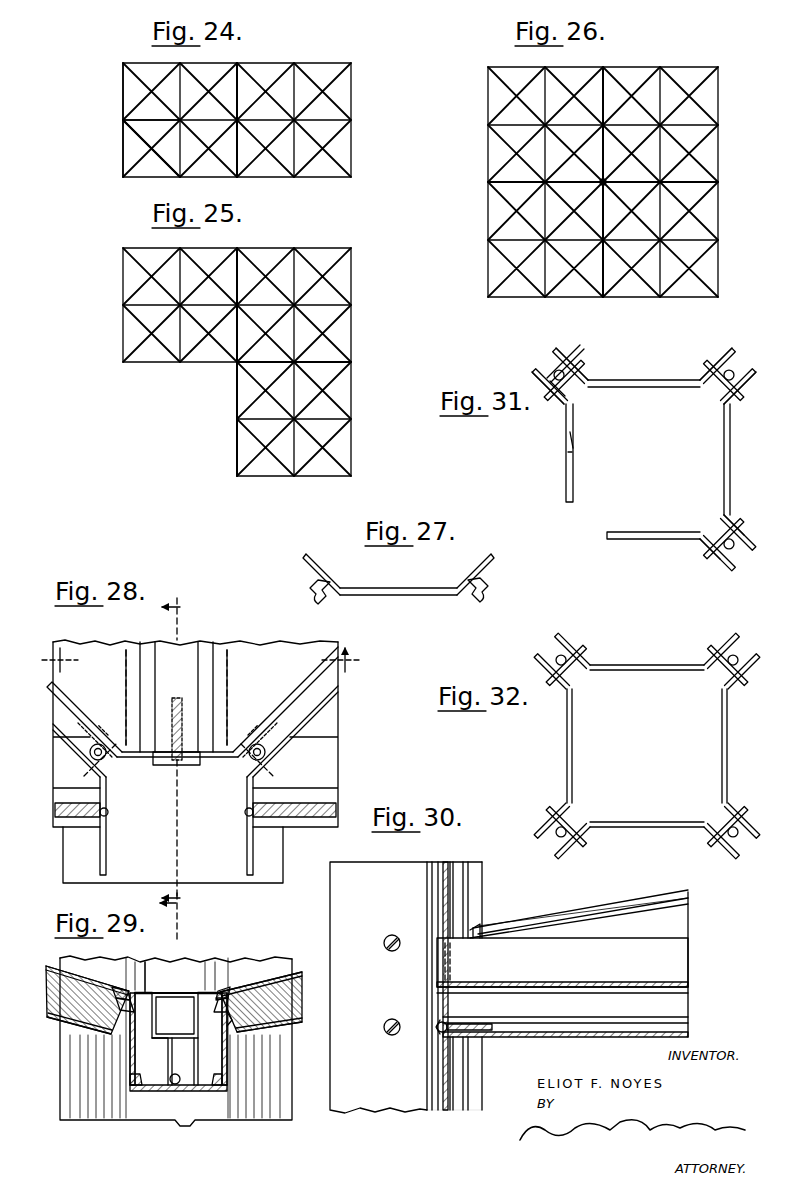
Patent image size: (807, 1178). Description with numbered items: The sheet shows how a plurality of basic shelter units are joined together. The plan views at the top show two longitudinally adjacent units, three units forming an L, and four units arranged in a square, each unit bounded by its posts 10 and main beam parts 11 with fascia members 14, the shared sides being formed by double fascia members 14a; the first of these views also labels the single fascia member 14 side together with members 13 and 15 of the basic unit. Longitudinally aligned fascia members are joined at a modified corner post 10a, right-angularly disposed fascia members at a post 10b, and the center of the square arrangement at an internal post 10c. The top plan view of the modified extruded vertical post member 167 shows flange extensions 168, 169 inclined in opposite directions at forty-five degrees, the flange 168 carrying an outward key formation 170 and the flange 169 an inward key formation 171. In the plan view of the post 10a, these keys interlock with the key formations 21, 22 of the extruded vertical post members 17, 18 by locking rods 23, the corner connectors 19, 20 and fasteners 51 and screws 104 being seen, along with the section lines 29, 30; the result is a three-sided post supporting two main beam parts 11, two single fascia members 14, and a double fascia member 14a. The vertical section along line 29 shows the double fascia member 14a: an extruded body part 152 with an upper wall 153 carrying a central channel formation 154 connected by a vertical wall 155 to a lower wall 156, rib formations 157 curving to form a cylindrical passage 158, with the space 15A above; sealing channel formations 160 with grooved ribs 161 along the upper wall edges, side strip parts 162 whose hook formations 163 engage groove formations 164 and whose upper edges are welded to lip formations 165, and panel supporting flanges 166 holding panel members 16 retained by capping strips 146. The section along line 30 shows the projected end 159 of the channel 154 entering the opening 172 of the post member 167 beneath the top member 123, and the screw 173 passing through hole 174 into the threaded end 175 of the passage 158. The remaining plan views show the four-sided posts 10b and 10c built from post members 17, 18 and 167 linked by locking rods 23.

In FIG. 24, the post 10 is at (123, 63).
In FIG. 25, the post 10 is at (123, 248).
In FIG. 26, the post 10 is at (488, 67).
In FIG. 24, the modified corner post 10a is at (237, 63).
In FIG. 25, the modified corner post 10a is at (237, 248).
In FIG. 26, the modified corner post 10a is at (603, 67).
In FIG. 28, the modified corner post 10a is at (88, 858).
In FIG. 29, the modified corner post 10a is at (195, 1128).
In FIG. 30, the modified corner post 10a is at (418, 1120).
In FIG. 25, the modified corner post 10b is at (237, 362).
In FIG. 31, the modified corner post 10b is at (562, 454).
In FIG. 26, the modified corner post 10c is at (603, 182).
In FIG. 32, the modified corner post 10c is at (634, 648).
In FIG. 24, the main beam part 11 is at (128, 70).
In FIG. 25, the main beam part 11 is at (237, 362).
In FIG. 26, the main beam part 11 is at (603, 182).
In FIG. 30, the main beam part 11 is at (608, 903).
In FIG. 24, the diagonal strut 13 is at (135, 132).
In FIG. 24, the fascia member 14 is at (123, 98).
In FIG. 28, the fascia member 14 is at (52, 815).
In FIG. 24, the double fascia member 14a is at (237, 120).
In FIG. 25, the double fascia member 14a is at (237, 286).
In FIG. 26, the double fascia member 14a is at (603, 103).
In FIG. 28, the double fascia member 14a is at (140, 644).
In FIG. 29, the double fascia member 14a is at (202, 957).
In FIG. 30, the double fascia member 14a is at (702, 993).
In FIG. 24, the horizontal strut 15 is at (123, 120).
In FIG. 29, the channel box 15A is at (175, 1015).
In FIG. 29, the panel member 16 is at (38, 990).
In FIG. 31, the extruded vertical post member 17 is at (573, 476).
In FIG. 28, the extruded vertical post member 17 is at (106, 862).
In FIG. 30, the extruded vertical post member 17 is at (352, 1108).
In FIG. 31, the extruded vertical post member 18 is at (630, 532).
In FIG. 28, the extruded vertical post member 18 is at (247, 868).
In FIG. 31, the corner connector 19 is at (556, 392).
In FIG. 28, the corner connector 19 is at (88, 768).
In FIG. 31, the corner connector 20 is at (722, 566).
In FIG. 28, the corner connector 20 is at (266, 760).
In FIG. 31, the key formation 21 is at (582, 372).
In FIG. 28, the key formation 21 is at (88, 736).
In FIG. 31, the key formation 22 is at (736, 522).
In FIG. 28, the key formation 22 is at (242, 772).
In FIG. 31, the locking rod 23 is at (556, 370).
In FIG. 32, the locking rod 23 is at (730, 658).
In FIG. 28, the locking rod 23 is at (110, 782).
In FIG. 28, the section line 29 is at (195, 669).
In FIG. 28, the section line 30 is at (181, 752).
In FIG. 29, the section line 30 is at (179, 916).
In FIG. 28, the fastener 51 is at (86, 754).
In FIG. 28, the screw 104 is at (108, 818).
In FIG. 30, the screw 104 is at (386, 950).
In FIG. 30, the top member 123 is at (688, 899).
In FIG. 28, the capping strip 146 is at (98, 648).
In FIG. 29, the capping strip 146 is at (72, 967).
In FIG. 30, the capping strip 146 is at (688, 928).
In FIG. 29, the extruded body part 152 is at (160, 1092).
In FIG. 28, the upper wall 153 is at (206, 655).
In FIG. 29, the upper wall 153 is at (150, 990).
In FIG. 28, the channel formation 154 is at (192, 652).
In FIG. 30, the channel formation 154 is at (575, 985).
In FIG. 29, the vertical wall 155 is at (174, 1051).
In FIG. 30, the vertical wall 155 is at (688, 1012).
In FIG. 29, the lower wall 156 is at (135, 1092).
In FIG. 30, the lower wall 156 is at (563, 1038).
In FIG. 29, the rib formation 157 is at (180, 1076).
In FIG. 30, the rib formation 157 is at (608, 1025).
In FIG. 29, the cylindrical passage 158 is at (178, 1092).
In FIG. 30, the cylindrical passage 158 is at (566, 1028).
In FIG. 28, the projected end 159 is at (200, 765).
In FIG. 30, the projected end 159 is at (440, 978).
In FIG. 29, the sealing channel formation 160 is at (128, 988).
In FIG. 29, the grooved rib 161 is at (115, 985).
In FIG. 29, the extruded strip part 162 is at (230, 1058).
In FIG. 29, the hook formation 163 is at (228, 1080).
In FIG. 29, the groove formation 164 is at (222, 1090).
In FIG. 29, the lip formation 165 is at (230, 1040).
In FIG. 29, the panel supporting flange 166 is at (80, 1030).
In FIG. 27, the modified extruded vertical post member 167 is at (398, 596).
In FIG. 31, the modified extruded vertical post member 167 is at (640, 388).
In FIG. 32, the modified extruded vertical post member 167 is at (632, 672).
In FIG. 28, the modified extruded vertical post member 167 is at (132, 758).
In FIG. 30, the modified extruded vertical post member 167 is at (443, 898).
In FIG. 27, the flange extension 168 is at (324, 572).
In FIG. 31, the flange extension 168 is at (572, 358).
In FIG. 28, the flange extension 168 is at (120, 735).
In FIG. 27, the flange extension 169 is at (478, 565).
In FIG. 31, the flange extension 169 is at (724, 362).
In FIG. 28, the flange extension 169 is at (252, 735).
In FIG. 27, the key formation 170 is at (326, 602).
In FIG. 31, the key formation 170 is at (576, 398).
In FIG. 28, the key formation 170 is at (100, 722).
In FIG. 27, the key formation 171 is at (490, 580).
In FIG. 31, the key formation 171 is at (740, 368).
In FIG. 28, the key formation 171 is at (254, 733).
In FIG. 29, the opening 172 is at (184, 992).
In FIG. 30, the opening 172 is at (450, 997).
In FIG. 28, the screw 173 is at (177, 762).
In FIG. 30, the screw 173 is at (437, 1030).
In FIG. 30, the hole 174 is at (440, 1033).
In FIG. 30, the thread 175 is at (460, 1036).